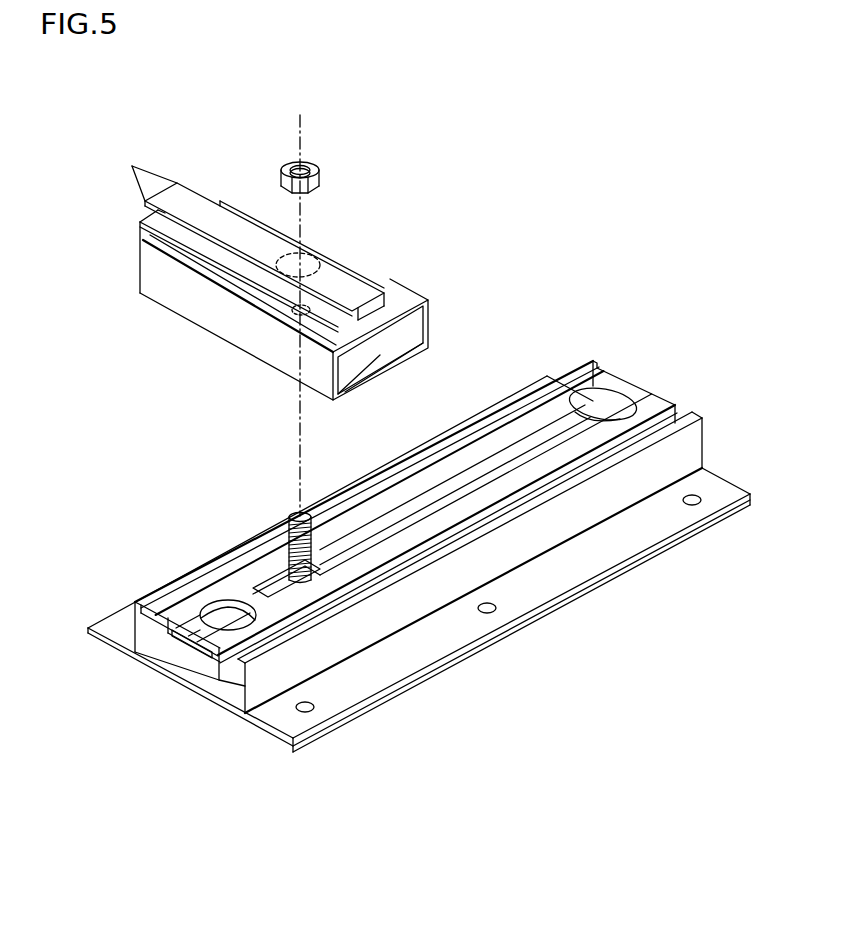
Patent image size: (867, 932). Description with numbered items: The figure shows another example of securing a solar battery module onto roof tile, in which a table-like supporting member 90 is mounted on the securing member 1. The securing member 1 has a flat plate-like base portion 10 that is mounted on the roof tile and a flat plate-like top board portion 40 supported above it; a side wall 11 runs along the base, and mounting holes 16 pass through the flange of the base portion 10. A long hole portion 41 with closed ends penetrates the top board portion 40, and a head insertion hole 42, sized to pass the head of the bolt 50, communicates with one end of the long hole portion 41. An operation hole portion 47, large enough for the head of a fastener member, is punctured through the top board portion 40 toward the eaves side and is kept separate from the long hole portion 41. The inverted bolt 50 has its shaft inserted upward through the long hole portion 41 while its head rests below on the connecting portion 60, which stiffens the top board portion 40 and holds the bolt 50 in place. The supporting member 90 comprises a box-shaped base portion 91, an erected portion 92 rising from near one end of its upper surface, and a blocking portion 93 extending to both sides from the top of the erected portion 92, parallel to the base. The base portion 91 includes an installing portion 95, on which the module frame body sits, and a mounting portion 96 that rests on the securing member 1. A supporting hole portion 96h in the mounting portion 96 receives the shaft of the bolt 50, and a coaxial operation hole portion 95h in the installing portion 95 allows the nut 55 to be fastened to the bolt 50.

The securing member 1 is at (433, 553).
The base portion 10 is at (252, 745).
The side wall 11 is at (596, 556).
The mounting hole 16 is at (700, 496).
The top board portion 40 is at (406, 497).
The long hole portion 41 is at (282, 590).
The head insertion hole 42 is at (595, 388).
The operation hole portion 47 is at (222, 616).
The bolt 50 is at (299, 517).
The nut 55 is at (318, 172).
The connecting portion 60 is at (188, 642).
The supporting member 90 is at (280, 263).
The base portion 91 is at (238, 204).
The erected portion 92 is at (392, 315).
The blocking portion 93 is at (132, 166).
The installing portion 95 is at (140, 235).
The operation hole portion 95h is at (312, 258).
The mounting portion 96 is at (426, 345).
The supporting hole portion 96h is at (292, 313).